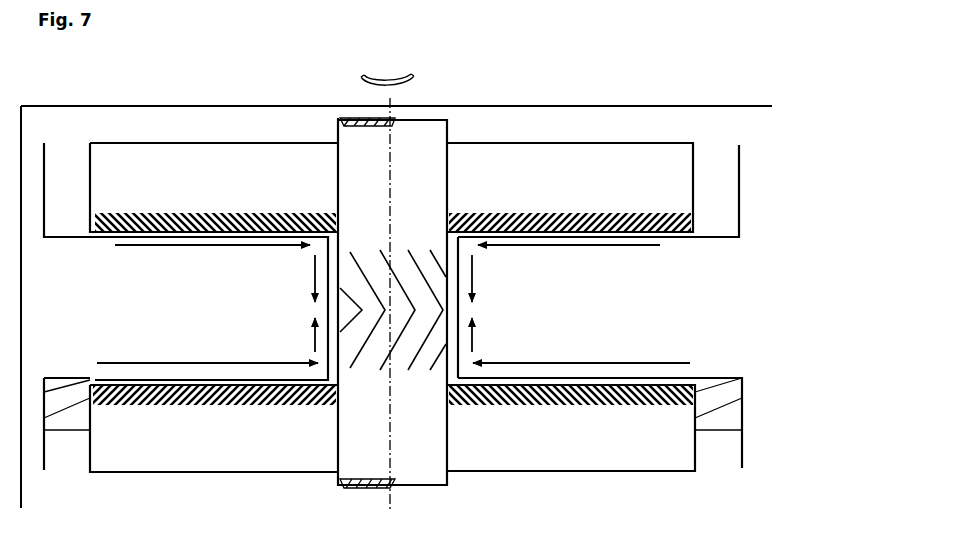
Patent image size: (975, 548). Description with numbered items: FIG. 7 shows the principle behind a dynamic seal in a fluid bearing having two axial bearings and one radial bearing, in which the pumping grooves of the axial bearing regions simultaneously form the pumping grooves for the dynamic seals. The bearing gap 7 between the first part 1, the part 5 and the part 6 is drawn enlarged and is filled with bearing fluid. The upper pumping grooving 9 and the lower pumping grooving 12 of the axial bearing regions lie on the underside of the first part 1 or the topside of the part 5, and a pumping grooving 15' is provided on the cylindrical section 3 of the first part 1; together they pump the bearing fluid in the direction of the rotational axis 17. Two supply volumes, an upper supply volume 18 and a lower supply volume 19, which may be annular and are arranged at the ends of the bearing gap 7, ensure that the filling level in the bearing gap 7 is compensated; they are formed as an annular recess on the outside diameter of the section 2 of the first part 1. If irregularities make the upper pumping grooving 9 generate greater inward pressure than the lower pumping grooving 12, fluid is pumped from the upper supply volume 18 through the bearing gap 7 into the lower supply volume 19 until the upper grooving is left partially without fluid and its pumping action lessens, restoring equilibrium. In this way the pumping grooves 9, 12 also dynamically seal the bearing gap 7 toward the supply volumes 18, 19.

The first part 1 is at (452, 105).
The section of the first part 2 is at (506, 165).
The cylindrical section 3 is at (420, 465).
The part 5 is at (258, 447).
The part 6 is at (625, 325).
The bearing gap 7 is at (95, 231).
The upper pumping grooving 9 is at (562, 215).
The lower pumping grooving 12 is at (602, 402).
The pumping grooving 15' is at (341, 203).
The rotational axis 17 is at (397, 108).
The upper supply volume 18 is at (706, 213).
The lower supply volume 19 is at (727, 448).